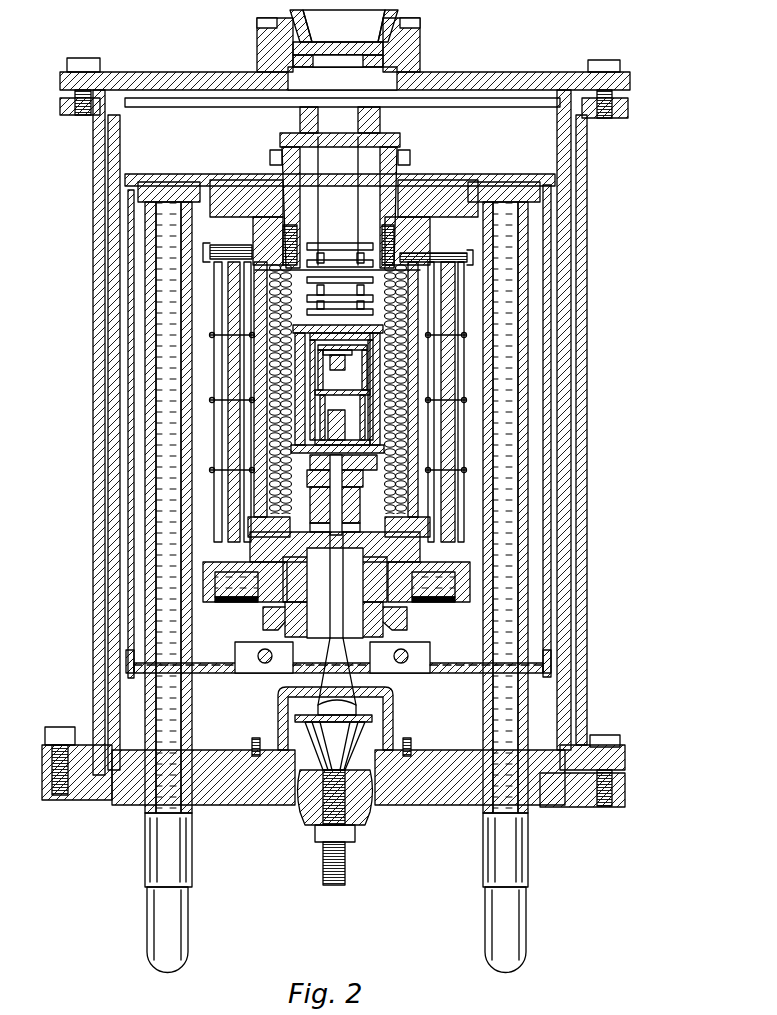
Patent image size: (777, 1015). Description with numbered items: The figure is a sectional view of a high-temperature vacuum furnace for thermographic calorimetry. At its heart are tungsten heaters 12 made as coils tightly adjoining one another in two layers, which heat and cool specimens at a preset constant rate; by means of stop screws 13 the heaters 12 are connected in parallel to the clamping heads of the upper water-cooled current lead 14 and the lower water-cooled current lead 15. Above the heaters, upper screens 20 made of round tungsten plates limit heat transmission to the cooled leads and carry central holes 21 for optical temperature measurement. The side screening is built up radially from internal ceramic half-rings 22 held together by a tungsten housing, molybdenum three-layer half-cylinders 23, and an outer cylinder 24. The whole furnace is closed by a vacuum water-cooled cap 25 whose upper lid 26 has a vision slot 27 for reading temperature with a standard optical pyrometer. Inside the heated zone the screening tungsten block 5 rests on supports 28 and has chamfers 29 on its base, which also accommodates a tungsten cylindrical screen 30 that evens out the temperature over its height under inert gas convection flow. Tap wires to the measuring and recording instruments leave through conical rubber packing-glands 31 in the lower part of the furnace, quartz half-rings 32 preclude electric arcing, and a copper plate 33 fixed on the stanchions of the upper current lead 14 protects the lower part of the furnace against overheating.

The screening tungsten block 5 is at (400, 375).
The tungsten heaters 12 is at (290, 417).
The stop screws 13 is at (263, 222).
The upper water-cooled current lead 14 is at (292, 205).
The lower water-cooled current lead 15 is at (263, 618).
The upper screens 20 is at (395, 264).
The central holes 21 is at (338, 246).
The internal ceramic half-rings 22 is at (257, 372).
The molybdenum three-layer half-cylinders 23 is at (220, 276).
The outer cylinder 24 is at (551, 612).
The vacuum water-cooled cap 25 is at (112, 190).
The upper lid 26 is at (272, 50).
The vision slot 27 is at (420, 56).
The supports 28 is at (365, 503).
The chamfers 29 is at (373, 437).
The tungsten cylindrical screen 30 is at (290, 440).
The conical rubber packing-glands 31 is at (358, 825).
The quartz half-rings 32 is at (263, 527).
The copper plate 33 is at (215, 680).